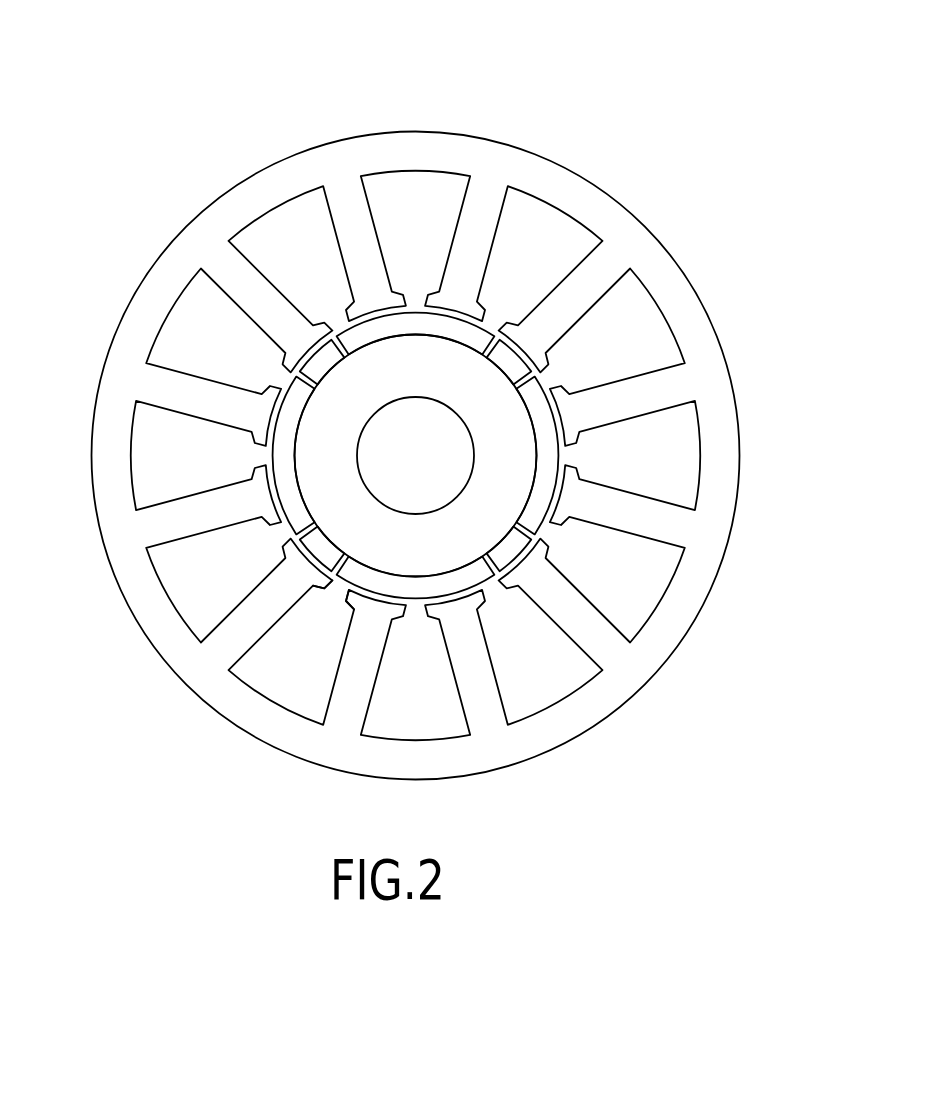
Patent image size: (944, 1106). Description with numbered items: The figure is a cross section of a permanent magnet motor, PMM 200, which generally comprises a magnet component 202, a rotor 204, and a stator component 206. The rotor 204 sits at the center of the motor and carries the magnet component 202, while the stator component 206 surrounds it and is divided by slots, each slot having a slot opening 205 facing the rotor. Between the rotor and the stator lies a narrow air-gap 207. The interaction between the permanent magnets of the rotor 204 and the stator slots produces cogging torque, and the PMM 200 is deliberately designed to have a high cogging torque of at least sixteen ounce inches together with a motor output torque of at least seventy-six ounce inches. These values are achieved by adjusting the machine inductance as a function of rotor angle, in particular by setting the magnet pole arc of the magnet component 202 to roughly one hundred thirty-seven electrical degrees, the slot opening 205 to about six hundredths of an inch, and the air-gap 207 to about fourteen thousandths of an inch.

The PMM 200 is at (646, 97).
The magnet component 202 is at (470, 338).
The rotor 204 is at (408, 373).
The slot opening 205 is at (272, 543).
The stator component 206 is at (212, 673).
The air-gap 207 is at (348, 592).